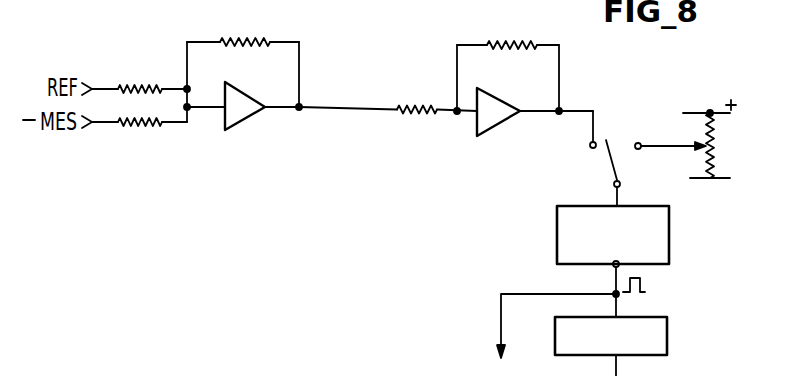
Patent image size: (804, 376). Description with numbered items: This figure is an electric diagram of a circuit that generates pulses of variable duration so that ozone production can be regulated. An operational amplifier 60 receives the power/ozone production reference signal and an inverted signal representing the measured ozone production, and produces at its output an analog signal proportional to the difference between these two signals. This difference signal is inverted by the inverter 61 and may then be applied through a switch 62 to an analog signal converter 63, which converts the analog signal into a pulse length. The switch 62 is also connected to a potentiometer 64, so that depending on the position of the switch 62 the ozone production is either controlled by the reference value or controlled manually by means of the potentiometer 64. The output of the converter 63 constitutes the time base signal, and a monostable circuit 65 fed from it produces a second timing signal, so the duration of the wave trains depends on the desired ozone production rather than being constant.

The operational amplifier 60 is at (245, 114).
The inverter 61 is at (492, 130).
The switch 62 is at (601, 168).
The analog signal converter 63 is at (553, 234).
The potentiometer 64 is at (675, 140).
The monostable circuit 65 is at (667, 341).